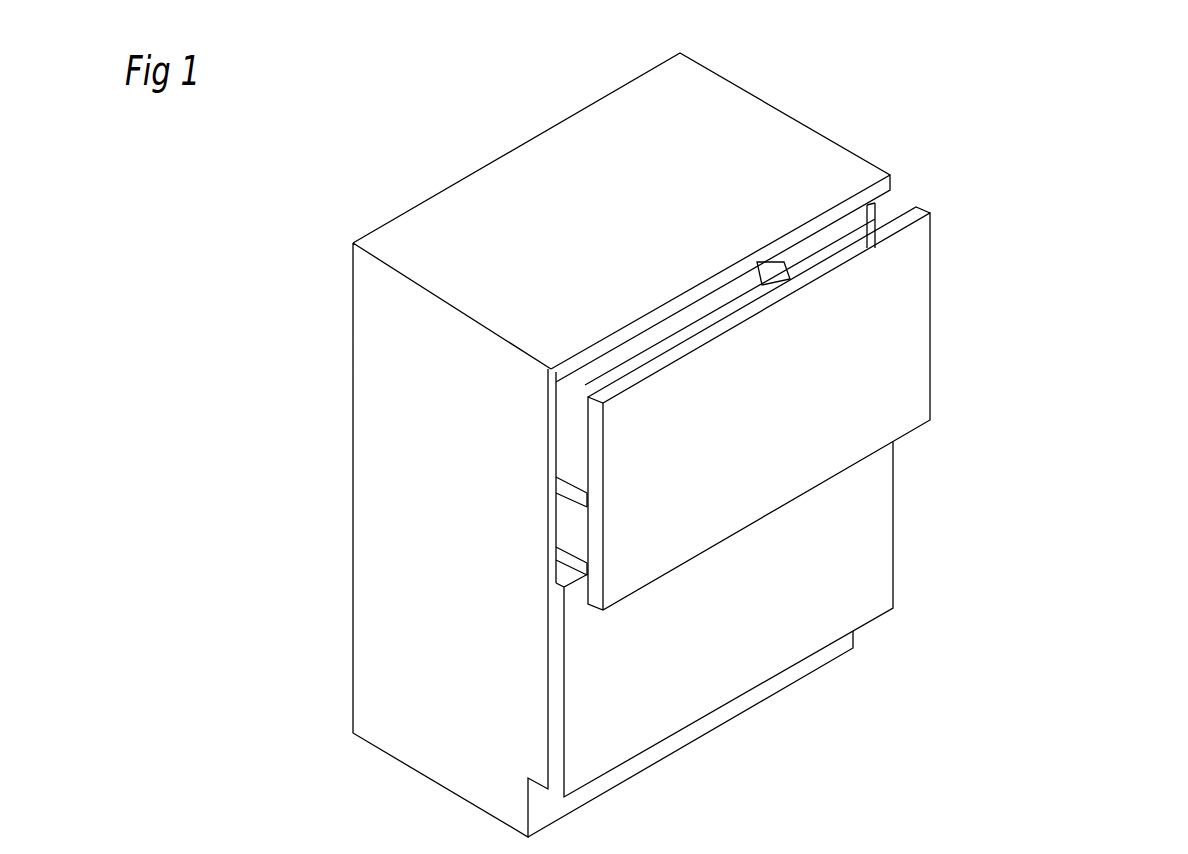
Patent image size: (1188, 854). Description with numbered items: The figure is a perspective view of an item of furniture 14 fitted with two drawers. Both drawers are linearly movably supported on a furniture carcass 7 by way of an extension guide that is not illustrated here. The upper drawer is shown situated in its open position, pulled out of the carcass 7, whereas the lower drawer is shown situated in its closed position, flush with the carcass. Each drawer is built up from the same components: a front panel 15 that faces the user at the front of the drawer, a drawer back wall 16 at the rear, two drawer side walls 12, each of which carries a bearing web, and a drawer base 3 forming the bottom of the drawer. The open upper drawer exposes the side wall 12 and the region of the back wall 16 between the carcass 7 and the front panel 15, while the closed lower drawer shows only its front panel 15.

The item of furniture 14 is at (1043, 223).
The furniture carcass 7 is at (405, 450).
The front panel 15 is at (900, 280).
The drawer back wall 16 is at (600, 363).
The drawer side wall 12 is at (758, 283).
The drawer base 3 is at (573, 443).